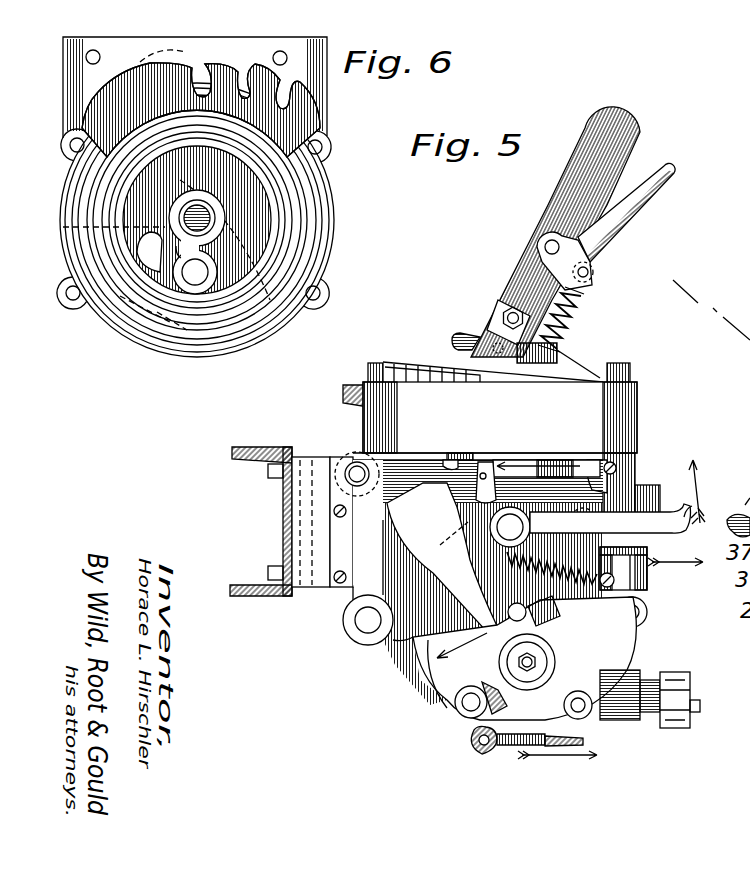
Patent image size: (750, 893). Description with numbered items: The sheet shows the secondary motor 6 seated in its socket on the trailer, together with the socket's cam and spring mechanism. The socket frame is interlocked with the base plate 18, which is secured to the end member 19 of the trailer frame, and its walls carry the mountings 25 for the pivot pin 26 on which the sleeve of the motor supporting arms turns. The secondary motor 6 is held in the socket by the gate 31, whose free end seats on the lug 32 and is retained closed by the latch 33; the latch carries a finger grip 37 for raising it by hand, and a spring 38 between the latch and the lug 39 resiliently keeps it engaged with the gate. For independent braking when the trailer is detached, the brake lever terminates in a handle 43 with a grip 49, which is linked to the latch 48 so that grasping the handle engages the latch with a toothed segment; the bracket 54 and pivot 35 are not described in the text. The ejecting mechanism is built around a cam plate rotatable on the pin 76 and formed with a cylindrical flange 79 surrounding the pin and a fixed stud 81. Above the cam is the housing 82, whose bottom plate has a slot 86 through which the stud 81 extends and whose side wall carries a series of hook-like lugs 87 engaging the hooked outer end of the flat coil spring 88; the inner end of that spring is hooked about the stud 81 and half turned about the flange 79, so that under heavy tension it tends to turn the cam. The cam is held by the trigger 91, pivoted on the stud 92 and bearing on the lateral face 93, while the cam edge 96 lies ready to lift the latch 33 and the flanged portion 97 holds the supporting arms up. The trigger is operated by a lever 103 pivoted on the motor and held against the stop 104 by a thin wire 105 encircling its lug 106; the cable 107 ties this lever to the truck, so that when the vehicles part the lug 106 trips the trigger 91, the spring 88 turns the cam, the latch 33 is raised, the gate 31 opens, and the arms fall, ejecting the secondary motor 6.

In FIG. 5, the secondary motor 6 is at (622, 660).
In FIG. 5, the base plate 18 is at (305, 503).
In FIG. 5, the end member 19 is at (290, 535).
In FIG. 5, the mountings 25 is at (348, 623).
In FIG. 5, the pivot pin 26 is at (368, 625).
In FIG. 5, the gate 31 is at (650, 541).
In FIG. 5, the lug 32 is at (645, 581).
In FIG. 5, the latch 33 is at (510, 527).
In FIG. 5, the pivot 35 is at (567, 526).
In FIG. 5, the finger grip 37 is at (680, 515).
In FIG. 5, the spring 38 is at (620, 615).
In FIG. 5, the lug 39 is at (641, 592).
In FIG. 5, the handle 43 is at (632, 134).
In FIG. 5, the latch 48 is at (463, 338).
In FIG. 5, the grip 49 is at (655, 193).
In FIG. 5, the bracket 54 is at (501, 305).
In FIG. 6, the pin 76 is at (188, 228).
In FIG. 6, the cylindrical flange 79 is at (216, 219).
In FIG. 6, the stud 81 is at (187, 282).
In FIG. 6, the housing 82 is at (333, 240).
In FIG. 5, the housing 82 is at (488, 411).
In FIG. 6, the slot 86 is at (143, 250).
In FIG. 6, the hook-like lugs 87 is at (288, 118).
In FIG. 6, the flat coil spring 88 is at (296, 195).
In FIG. 5, the trigger 91 is at (437, 541).
In FIG. 5, the stud 92 is at (357, 468).
In FIG. 5, the lateral face 93 is at (448, 460).
In FIG. 5, the cam edge 96 is at (497, 464).
In FIG. 5, the flanged portion 97 is at (484, 468).
In FIG. 5, the lever 103 is at (496, 690).
In FIG. 5, the stop 104 is at (557, 628).
In FIG. 5, the thin wire 105 is at (550, 597).
In FIG. 5, the lug 106 is at (470, 648).
In FIG. 5, the cable 107 is at (585, 742).